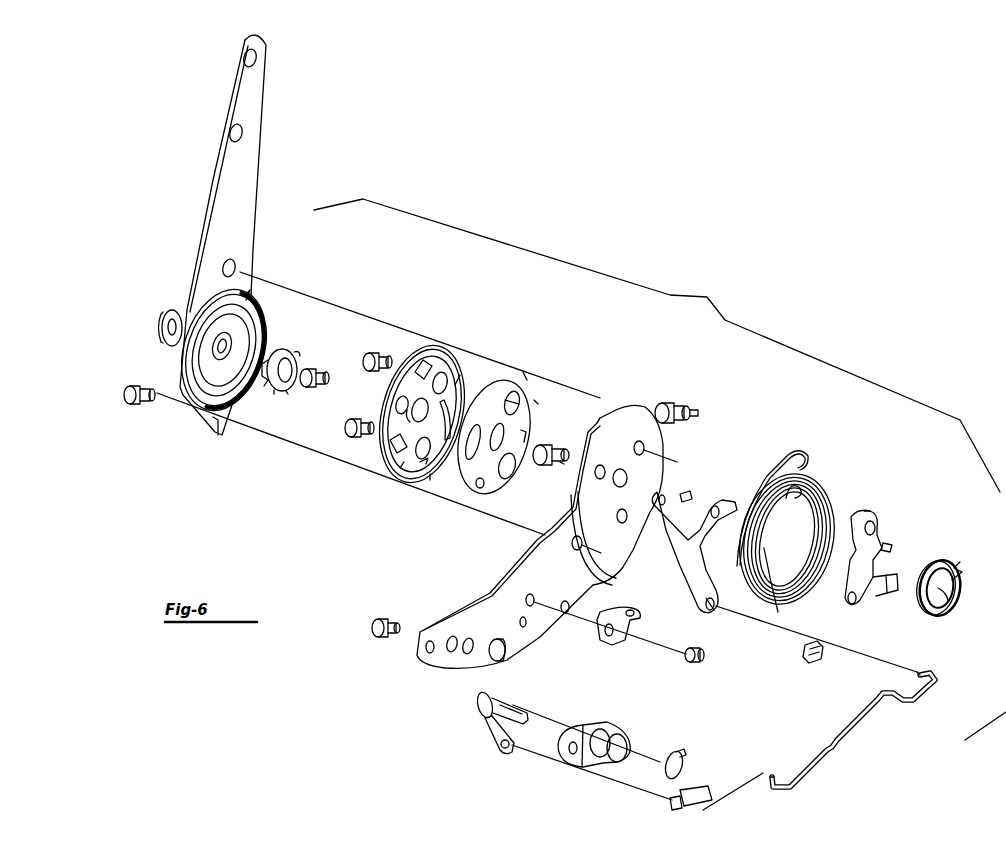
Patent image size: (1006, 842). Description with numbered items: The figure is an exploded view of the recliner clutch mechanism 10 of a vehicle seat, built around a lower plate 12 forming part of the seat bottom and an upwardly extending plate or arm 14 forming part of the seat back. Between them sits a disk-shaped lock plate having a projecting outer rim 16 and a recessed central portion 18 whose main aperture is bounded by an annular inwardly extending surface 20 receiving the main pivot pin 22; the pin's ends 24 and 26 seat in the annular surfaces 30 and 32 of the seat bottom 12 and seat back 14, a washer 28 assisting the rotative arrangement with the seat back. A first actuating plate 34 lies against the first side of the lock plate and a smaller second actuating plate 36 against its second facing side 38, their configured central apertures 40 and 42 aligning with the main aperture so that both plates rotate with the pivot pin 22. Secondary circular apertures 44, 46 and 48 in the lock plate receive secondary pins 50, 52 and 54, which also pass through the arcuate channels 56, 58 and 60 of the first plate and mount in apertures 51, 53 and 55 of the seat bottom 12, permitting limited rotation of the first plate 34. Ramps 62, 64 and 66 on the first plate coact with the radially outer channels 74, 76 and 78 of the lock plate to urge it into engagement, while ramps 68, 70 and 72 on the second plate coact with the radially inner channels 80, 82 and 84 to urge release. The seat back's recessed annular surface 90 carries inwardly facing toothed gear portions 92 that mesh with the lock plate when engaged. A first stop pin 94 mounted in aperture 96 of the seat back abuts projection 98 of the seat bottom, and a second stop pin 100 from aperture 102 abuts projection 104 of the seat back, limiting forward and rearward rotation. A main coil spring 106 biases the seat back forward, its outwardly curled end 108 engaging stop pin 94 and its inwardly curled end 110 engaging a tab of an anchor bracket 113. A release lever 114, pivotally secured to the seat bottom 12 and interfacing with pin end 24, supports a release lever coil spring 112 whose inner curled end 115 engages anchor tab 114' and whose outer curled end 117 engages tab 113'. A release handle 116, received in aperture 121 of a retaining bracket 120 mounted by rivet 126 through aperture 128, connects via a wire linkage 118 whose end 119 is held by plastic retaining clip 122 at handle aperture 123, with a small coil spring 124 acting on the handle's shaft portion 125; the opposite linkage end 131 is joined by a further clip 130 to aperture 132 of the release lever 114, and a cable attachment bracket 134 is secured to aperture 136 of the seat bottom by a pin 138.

The recliner clutch mechanism 10 is at (660, 469).
The lower plate 12 is at (550, 531).
The plate (or arm) 14 is at (224, 248).
The projecting outer rim 16 is at (411, 408).
The recessed central portion 18 is at (452, 350).
The annular and inwardly extending surface 20 is at (410, 467).
The main pivot pin 22 is at (560, 455).
The end of main pivot pin 24 is at (564, 464).
The end of main pivot pin 26 is at (556, 447).
The washer 28 is at (158, 322).
The inwardly and annular defined surface 30 is at (627, 478).
The inwardly and annular defined surface 32 is at (216, 347).
The first actuating plate 34 is at (497, 461).
The second actuating plate 36 is at (276, 391).
The second facing side of lock plate 38 is at (420, 350).
The central aperture of first actuating plate 40 is at (523, 436).
The central aperture of second actuating plate 42 is at (279, 374).
The secondary circular aperture 44 is at (411, 410).
The secondary circular aperture 46 is at (405, 472).
The secondary circular aperture 48 is at (457, 380).
The secondary pin 50 is at (312, 368).
The aperture in seat bottom 51 is at (603, 466).
The secondary pin 52 is at (346, 422).
The aperture in seat bottom 53 is at (625, 524).
The secondary pin 54 is at (364, 352).
The aperture in seat bottom 55 is at (643, 441).
The elongated and arcuate shaped channel 56 is at (480, 476).
The elongated and arcuate shaped channel 58 is at (512, 478).
The elongated and arcuate shaped channel 60 is at (524, 374).
The projecting ramp 62 is at (514, 393).
The projecting ramp 64 is at (486, 472).
The projecting ramp 66 is at (536, 400).
The projecting ramp 68 is at (268, 382).
The projecting ramp 70 is at (288, 392).
The projecting ramp 72 is at (296, 352).
The arcuately extending channel 74 is at (412, 368).
The arcuately extending channel 76 is at (392, 448).
The arcuately extending channel 78 is at (428, 458).
The arcuately extending channel 80 is at (395, 398).
The arcuately extending channel 82 is at (432, 478).
The arcuately extending channel 84 is at (448, 380).
The recessed annular surface 90 is at (209, 320).
The inwardly facing toothed gear portions 92 is at (246, 298).
The first stop pin 94 is at (672, 404).
The mounting aperture 96 is at (234, 260).
The projection 98 is at (600, 416).
The second stop pin 100 is at (126, 400).
The aperture 102 is at (582, 538).
The projection 104 is at (213, 428).
The main coil spring 106 is at (779, 610).
The outwardly curled end 108 is at (786, 515).
The inwardly curled end 110 is at (792, 505).
The release lever coil spring 112 is at (953, 566).
The anchor bracket 113 is at (885, 533).
The tab 113' is at (897, 522).
The release lever 114 is at (776, 561).
The anchor tab 114' is at (712, 484).
The inner curled end 115 is at (946, 595).
The release handle 116 is at (565, 758).
The outer curled end 117 is at (964, 570).
The wire linkage 118 is at (848, 712).
The end of wire linkage 119 is at (772, 775).
The retaining bracket 120 is at (612, 738).
The aperture 121 is at (613, 720).
The plastic retaining clip 122 is at (712, 796).
The aperture 123 is at (511, 744).
The small coil spring 124 is at (676, 750).
The extending shaft portion 125 is at (504, 706).
The rivet 126 is at (376, 618).
The aperture 128 is at (432, 660).
The plastic retaining clip 130 is at (805, 655).
The opposite end of wire linkage 131 is at (918, 670).
The aperture 132 is at (715, 612).
The cable attachment bracket 134 is at (612, 646).
The aperture 136 is at (533, 606).
The pin 138 is at (702, 660).